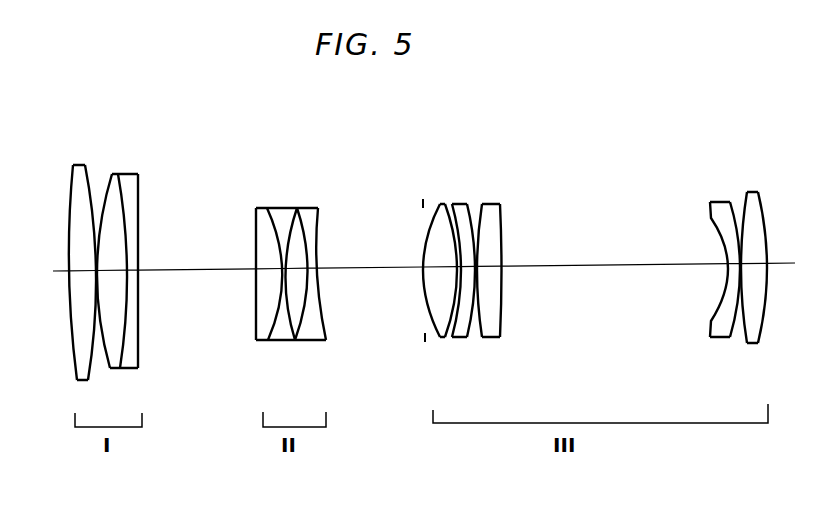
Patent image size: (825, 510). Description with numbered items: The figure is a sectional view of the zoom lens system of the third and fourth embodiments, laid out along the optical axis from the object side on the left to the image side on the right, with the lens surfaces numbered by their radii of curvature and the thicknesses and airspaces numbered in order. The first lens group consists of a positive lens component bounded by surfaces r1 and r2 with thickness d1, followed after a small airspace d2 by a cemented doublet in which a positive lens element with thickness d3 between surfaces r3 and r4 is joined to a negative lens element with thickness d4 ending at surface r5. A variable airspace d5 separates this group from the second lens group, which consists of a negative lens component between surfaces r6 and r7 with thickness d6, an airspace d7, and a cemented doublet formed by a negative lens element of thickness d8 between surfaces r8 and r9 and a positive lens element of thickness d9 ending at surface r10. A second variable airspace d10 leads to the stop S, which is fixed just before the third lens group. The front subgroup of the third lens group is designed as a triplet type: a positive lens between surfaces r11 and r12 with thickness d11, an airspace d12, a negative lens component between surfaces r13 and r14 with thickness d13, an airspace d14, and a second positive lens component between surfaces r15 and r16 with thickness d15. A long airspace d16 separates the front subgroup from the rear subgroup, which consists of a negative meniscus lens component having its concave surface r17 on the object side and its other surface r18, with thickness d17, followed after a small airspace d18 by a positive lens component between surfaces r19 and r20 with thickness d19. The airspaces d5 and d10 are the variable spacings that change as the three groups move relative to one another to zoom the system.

The radius of curvature of the first surface r1 is at (68, 196).
The radius of curvature of the second surface r2 is at (89, 183).
The radius of curvature of the third surface r3 is at (107, 182).
The radius of curvature of the fourth surface r4 is at (120, 177).
The radius of curvature of the fifth surface r5 is at (139, 199).
The radius of curvature of the sixth surface r6 is at (256, 228).
The radius of curvature of the seventh surface r7 is at (275, 207).
The radius of curvature of the eighth surface r8 is at (288, 215).
The radius of curvature of the ninth surface r9 is at (307, 212).
The radius of curvature of the tenth surface r10 is at (319, 238).
The radius of curvature of the eleventh surface r11 is at (428, 233).
The radius of curvature of the twelfth surface r12 is at (445, 215).
The radius of curvature of the thirteenth surface r13 is at (452, 212).
The radius of curvature of the fourteenth surface r14 is at (470, 213).
The radius of curvature of the fifteenth surface r15 is at (484, 211).
The radius of curvature of the sixteenth surface r16 is at (502, 226).
The radius of curvature of the seventeenth surface r17 is at (712, 225).
The radius of curvature of the eighteenth surface r18 is at (738, 203).
The radius of curvature of the nineteenth surface r19 is at (743, 195).
The radius of curvature of the twentieth surface r20 is at (762, 215).
The thickness of the first lens element d1 is at (79, 276).
The airspace between the first and second lens elements d2 is at (93, 284).
The thickness of the second lens element d3 is at (126, 282).
The thickness of the third lens element d4 is at (132, 276).
The variable airspace between the first and second lens groups d5 is at (188, 272).
The thickness of the fourth lens element d6 is at (267, 275).
The airspace between the fourth and fifth lens elements d7 is at (279, 292).
The thickness of the fifth lens element d8 is at (318, 300).
The thickness of the sixth lens element d9 is at (319, 283).
The variable airspace between the second and third lens groups d10 is at (386, 270).
The thickness of the seventh lens element d11 is at (440, 273).
The airspace between the seventh and eighth lens elements d12 is at (457, 277).
The thickness of the eighth lens element d13 is at (468, 272).
The airspace between the eighth and ninth lens elements d14 is at (480, 276).
The thickness of the ninth lens element d15 is at (487, 275).
The airspace between the front and rear subgroups d16 is at (622, 268).
The thickness of the tenth lens element d17 is at (729, 271).
The airspace between the tenth and eleventh lens elements d18 is at (752, 268).
The thickness of the eleventh lens element d19 is at (753, 268).
The stop S is at (420, 199).